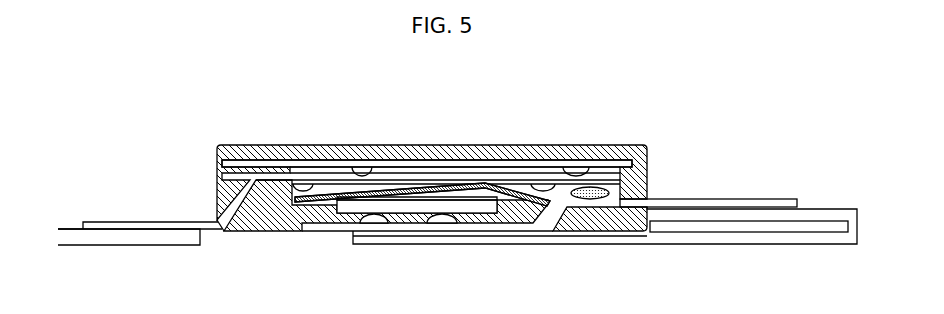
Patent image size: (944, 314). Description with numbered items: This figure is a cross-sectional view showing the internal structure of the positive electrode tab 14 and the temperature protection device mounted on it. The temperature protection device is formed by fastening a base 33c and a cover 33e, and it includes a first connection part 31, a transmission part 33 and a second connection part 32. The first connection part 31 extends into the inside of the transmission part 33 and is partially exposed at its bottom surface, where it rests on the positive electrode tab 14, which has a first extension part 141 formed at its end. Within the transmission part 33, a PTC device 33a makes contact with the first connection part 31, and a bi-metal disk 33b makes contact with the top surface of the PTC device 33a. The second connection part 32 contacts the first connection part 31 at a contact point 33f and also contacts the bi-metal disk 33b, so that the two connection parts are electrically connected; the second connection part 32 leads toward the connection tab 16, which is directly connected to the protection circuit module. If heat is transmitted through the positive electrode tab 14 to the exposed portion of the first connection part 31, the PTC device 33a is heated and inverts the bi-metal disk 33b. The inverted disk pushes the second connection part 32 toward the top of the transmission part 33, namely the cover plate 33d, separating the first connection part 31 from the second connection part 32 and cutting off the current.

The transmission part 33 is at (432, 188).
The PTC device 33a is at (470, 210).
The bi-metal disk 33b is at (413, 200).
The base 33c is at (248, 229).
The cover plate 33d is at (248, 162).
The cover 33e is at (297, 152).
The contact point 33f is at (588, 188).
The first connection part 31 is at (728, 201).
The second connection part 32 is at (128, 222).
The positive electrode tab 14 is at (548, 237).
The first extension part 141 is at (779, 218).
The connection tab 16 is at (146, 240).